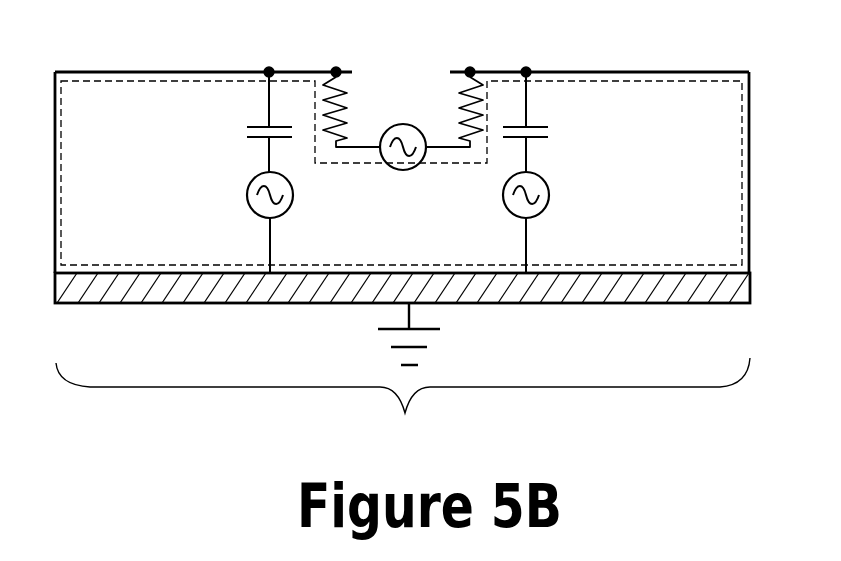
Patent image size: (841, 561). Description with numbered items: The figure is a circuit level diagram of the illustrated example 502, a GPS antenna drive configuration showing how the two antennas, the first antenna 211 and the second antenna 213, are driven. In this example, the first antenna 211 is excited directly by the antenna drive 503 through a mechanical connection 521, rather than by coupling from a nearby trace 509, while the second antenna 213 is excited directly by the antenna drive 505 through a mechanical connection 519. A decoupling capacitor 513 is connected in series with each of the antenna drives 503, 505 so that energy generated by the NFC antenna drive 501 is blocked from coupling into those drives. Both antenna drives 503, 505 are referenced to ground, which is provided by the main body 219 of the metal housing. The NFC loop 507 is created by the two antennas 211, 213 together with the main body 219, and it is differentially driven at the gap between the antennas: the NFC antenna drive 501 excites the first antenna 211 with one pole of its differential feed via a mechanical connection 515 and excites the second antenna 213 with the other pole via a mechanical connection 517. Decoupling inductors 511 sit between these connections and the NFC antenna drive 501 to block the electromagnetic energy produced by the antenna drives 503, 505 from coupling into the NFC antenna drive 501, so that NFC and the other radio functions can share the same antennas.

The ant-1 211 is at (240, 70).
The ant-2 213 is at (613, 72).
The main body 219 is at (350, 305).
The NFC antenna drive 501 is at (403, 178).
The illustrated example 502 is at (403, 401).
The antenna drive 503 is at (245, 196).
The antenna drive 505 is at (553, 203).
The NFC loop 507 is at (741, 137).
The nearby trace 509 is at (402, 172).
The decoupling inductors 511 is at (352, 108).
The decoupling capacitor 513 is at (245, 135).
The mechanical connection 515 is at (336, 66).
The mechanical connection 517 is at (470, 66).
The mechanical connection 519 is at (526, 66).
The mechanical connection 521 is at (269, 66).